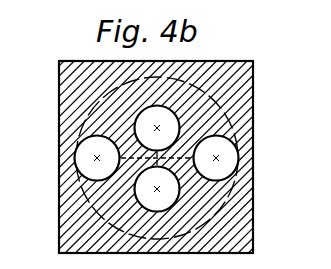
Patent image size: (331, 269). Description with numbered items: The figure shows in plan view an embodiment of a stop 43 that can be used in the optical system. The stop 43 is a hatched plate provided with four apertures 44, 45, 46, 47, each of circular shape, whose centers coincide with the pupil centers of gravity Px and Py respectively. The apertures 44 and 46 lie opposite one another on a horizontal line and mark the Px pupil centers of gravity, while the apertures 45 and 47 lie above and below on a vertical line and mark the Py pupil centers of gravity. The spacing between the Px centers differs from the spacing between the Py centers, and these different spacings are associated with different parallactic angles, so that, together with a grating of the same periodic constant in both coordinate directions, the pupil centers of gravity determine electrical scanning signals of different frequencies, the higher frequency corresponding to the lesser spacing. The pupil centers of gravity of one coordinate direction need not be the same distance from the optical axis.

The stop 43 is at (82, 229).
The aperture 44 is at (90, 145).
The aperture 45 is at (146, 119).
The aperture 46 is at (223, 165).
The aperture 47 is at (177, 197).